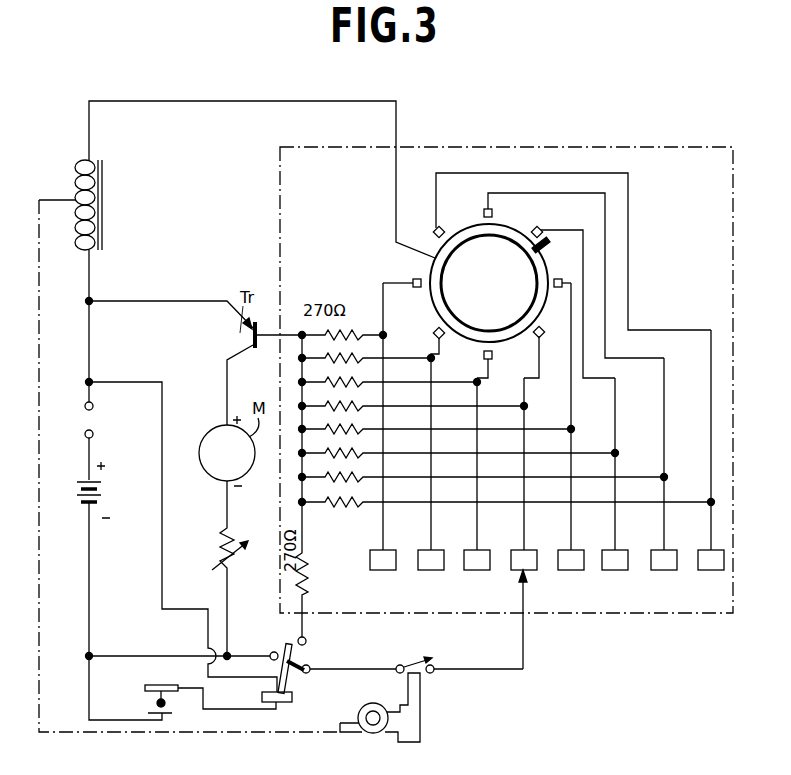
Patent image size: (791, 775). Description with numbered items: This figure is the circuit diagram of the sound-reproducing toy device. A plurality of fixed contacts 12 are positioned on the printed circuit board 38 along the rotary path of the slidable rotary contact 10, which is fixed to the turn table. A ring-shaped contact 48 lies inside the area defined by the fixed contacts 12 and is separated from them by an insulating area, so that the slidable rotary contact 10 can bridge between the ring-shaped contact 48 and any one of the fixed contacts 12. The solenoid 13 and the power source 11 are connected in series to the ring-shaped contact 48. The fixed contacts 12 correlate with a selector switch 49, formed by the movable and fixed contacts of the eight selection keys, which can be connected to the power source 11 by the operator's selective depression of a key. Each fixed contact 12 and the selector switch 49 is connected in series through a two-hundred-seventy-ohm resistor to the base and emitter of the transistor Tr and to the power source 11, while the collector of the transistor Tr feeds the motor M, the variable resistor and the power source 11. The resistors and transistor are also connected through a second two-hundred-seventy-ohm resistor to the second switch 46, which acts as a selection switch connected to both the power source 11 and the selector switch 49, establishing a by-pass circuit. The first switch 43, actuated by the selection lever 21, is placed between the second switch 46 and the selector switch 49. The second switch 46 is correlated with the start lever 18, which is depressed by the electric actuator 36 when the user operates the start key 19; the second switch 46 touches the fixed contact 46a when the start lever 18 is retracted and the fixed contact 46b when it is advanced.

The slidable rotary contact 10 is at (552, 252).
The power source 11 is at (77, 490).
The fixed contacts 12 is at (443, 228).
The solenoid 13 is at (101, 170).
The start lever 18 is at (283, 642).
The start key 19 is at (153, 684).
The selection lever 21 is at (422, 723).
The electric actuator 36 is at (290, 702).
The printed circuit board 38 is at (733, 300).
The first switch 43 is at (412, 663).
The second switch 46 is at (305, 656).
The fixed contact 46a is at (310, 673).
The fixed contact 46b is at (305, 640).
The ring-shaped contact 48 is at (434, 252).
The selector switch 49 is at (535, 600).